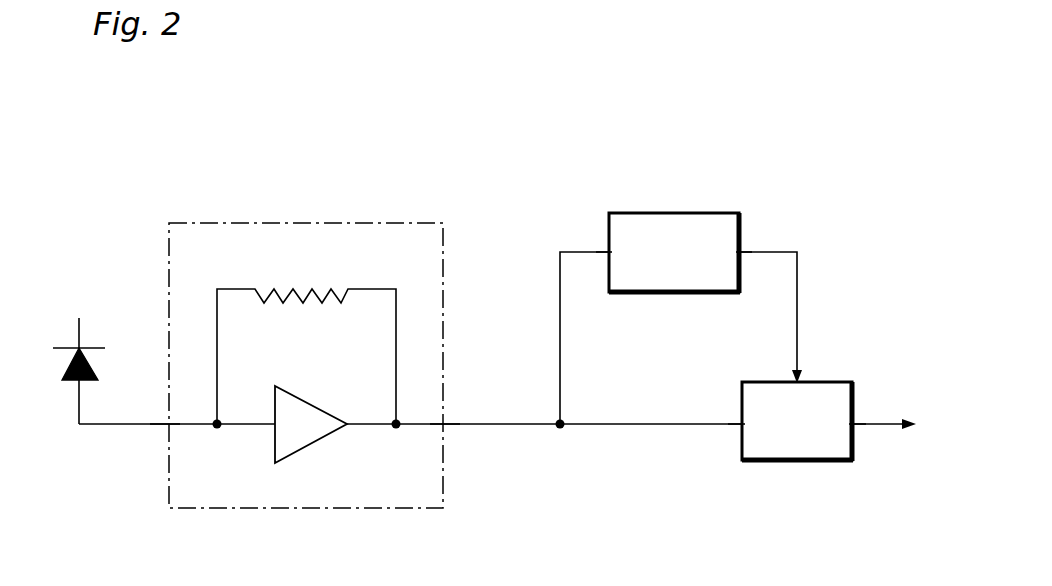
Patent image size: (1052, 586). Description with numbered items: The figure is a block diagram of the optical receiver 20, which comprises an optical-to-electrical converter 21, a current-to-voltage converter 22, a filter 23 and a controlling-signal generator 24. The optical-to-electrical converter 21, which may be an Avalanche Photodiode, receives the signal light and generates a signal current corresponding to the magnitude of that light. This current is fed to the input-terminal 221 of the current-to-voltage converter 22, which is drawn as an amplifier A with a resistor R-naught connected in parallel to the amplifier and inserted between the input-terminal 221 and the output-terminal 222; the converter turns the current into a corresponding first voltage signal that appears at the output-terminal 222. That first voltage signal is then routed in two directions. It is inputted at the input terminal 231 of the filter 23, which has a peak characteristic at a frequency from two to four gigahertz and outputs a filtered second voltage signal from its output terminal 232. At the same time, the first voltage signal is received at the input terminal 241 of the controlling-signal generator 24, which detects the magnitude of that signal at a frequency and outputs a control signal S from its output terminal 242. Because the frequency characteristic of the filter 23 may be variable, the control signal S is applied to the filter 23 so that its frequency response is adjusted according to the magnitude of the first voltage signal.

The optical receiver 20 is at (851, 108).
The optical-to-electrical converter 21 is at (70, 386).
The current-to-voltage converter 22 is at (357, 223).
The input-terminal 221 is at (165, 426).
The output-terminal 222 is at (447, 426).
The filter 23 is at (840, 382).
The input terminal 231 is at (738, 425).
The output terminal 232 is at (853, 425).
The controlling-signal generator 24 is at (677, 213).
The input terminal 241 is at (607, 250).
The output terminal 242 is at (740, 250).